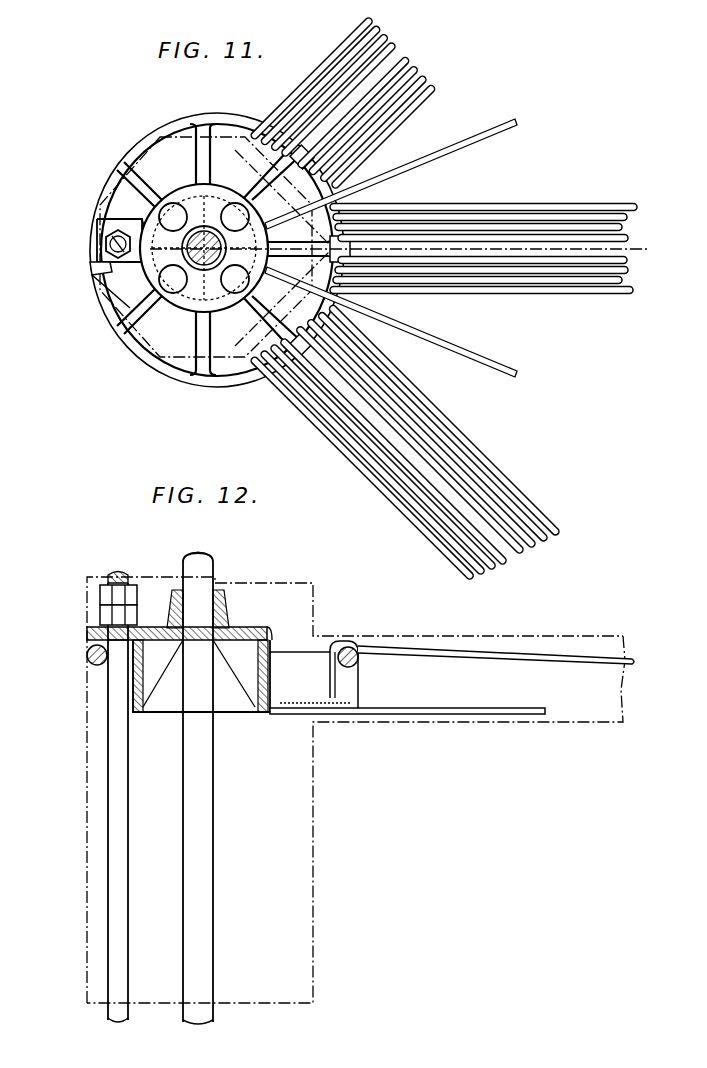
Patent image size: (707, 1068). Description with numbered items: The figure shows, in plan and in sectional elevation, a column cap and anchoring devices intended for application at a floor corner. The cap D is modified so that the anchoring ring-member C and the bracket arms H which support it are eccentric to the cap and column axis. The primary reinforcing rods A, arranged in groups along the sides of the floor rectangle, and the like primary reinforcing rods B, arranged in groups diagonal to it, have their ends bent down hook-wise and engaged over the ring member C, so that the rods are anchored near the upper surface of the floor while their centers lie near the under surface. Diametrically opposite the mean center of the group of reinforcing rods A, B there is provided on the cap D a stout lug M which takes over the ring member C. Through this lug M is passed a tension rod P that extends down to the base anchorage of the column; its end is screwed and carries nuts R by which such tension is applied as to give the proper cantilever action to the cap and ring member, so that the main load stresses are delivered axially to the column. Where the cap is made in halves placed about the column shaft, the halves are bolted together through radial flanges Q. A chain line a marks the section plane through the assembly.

In FIG. 11, the primary reinforcing rods A is at (500, 216).
In FIG. 12, the primary reinforcing rods A is at (532, 655).
In FIG. 11, the primary reinforcing rods B is at (383, 100).
In FIG. 11, the anchoring ring-member C is at (214, 124).
In FIG. 12, the anchoring ring-member C is at (88, 660).
In FIG. 11, the cap D is at (190, 202).
In FIG. 12, the cap D is at (245, 656).
In FIG. 11, the tension rod P is at (96, 226).
In FIG. 12, the tension rod P is at (118, 572).
In FIG. 11, the radial flanges Q is at (88, 244).
In FIG. 11, the lug M is at (95, 268).
In FIG. 12, the lug M is at (88, 636).
In FIG. 11, the nuts R is at (100, 280).
In FIG. 12, the nuts R is at (115, 598).
In FIG. 12, the bracket arms H is at (297, 678).
In FIG. 11, the axis line a is at (407, 243).